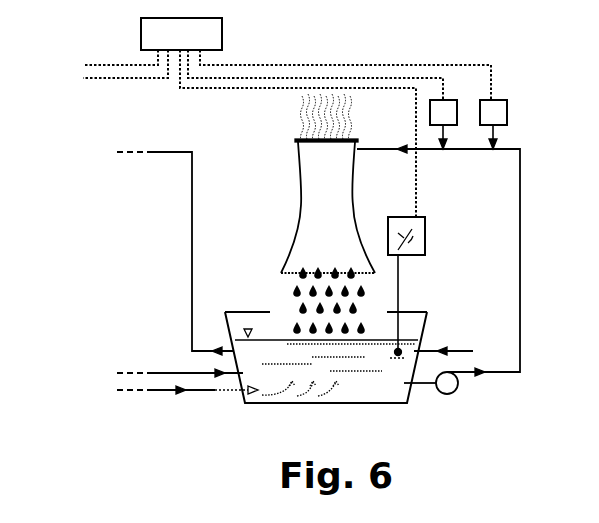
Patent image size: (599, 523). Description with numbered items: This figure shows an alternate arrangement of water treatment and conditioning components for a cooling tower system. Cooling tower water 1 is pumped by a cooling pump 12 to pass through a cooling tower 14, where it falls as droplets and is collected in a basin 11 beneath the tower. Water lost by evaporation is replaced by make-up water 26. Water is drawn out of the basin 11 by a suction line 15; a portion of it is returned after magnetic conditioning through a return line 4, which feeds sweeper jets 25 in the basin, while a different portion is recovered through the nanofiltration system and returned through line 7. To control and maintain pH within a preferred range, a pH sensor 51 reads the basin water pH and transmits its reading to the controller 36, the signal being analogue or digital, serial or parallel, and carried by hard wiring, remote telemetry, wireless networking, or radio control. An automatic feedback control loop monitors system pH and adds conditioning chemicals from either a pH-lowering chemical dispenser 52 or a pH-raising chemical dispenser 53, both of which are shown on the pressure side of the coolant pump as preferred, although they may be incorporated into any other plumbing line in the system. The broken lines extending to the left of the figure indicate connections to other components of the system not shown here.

The cooling tower water 1 is at (381, 143).
The return line 4 is at (216, 397).
The line 7 is at (180, 366).
The basin 11 is at (255, 310).
The cooling pump 12 is at (443, 394).
The cooling tower 14 is at (300, 178).
The suction line 15 is at (186, 212).
The sweeper jets 25 is at (250, 403).
The make-up water 26 is at (455, 343).
The controller 36 is at (140, 31).
The pH sensor 51 is at (427, 225).
The pH-lowering chemical dispenser 52 is at (448, 102).
The pH-raising chemical dispenser 53 is at (500, 100).